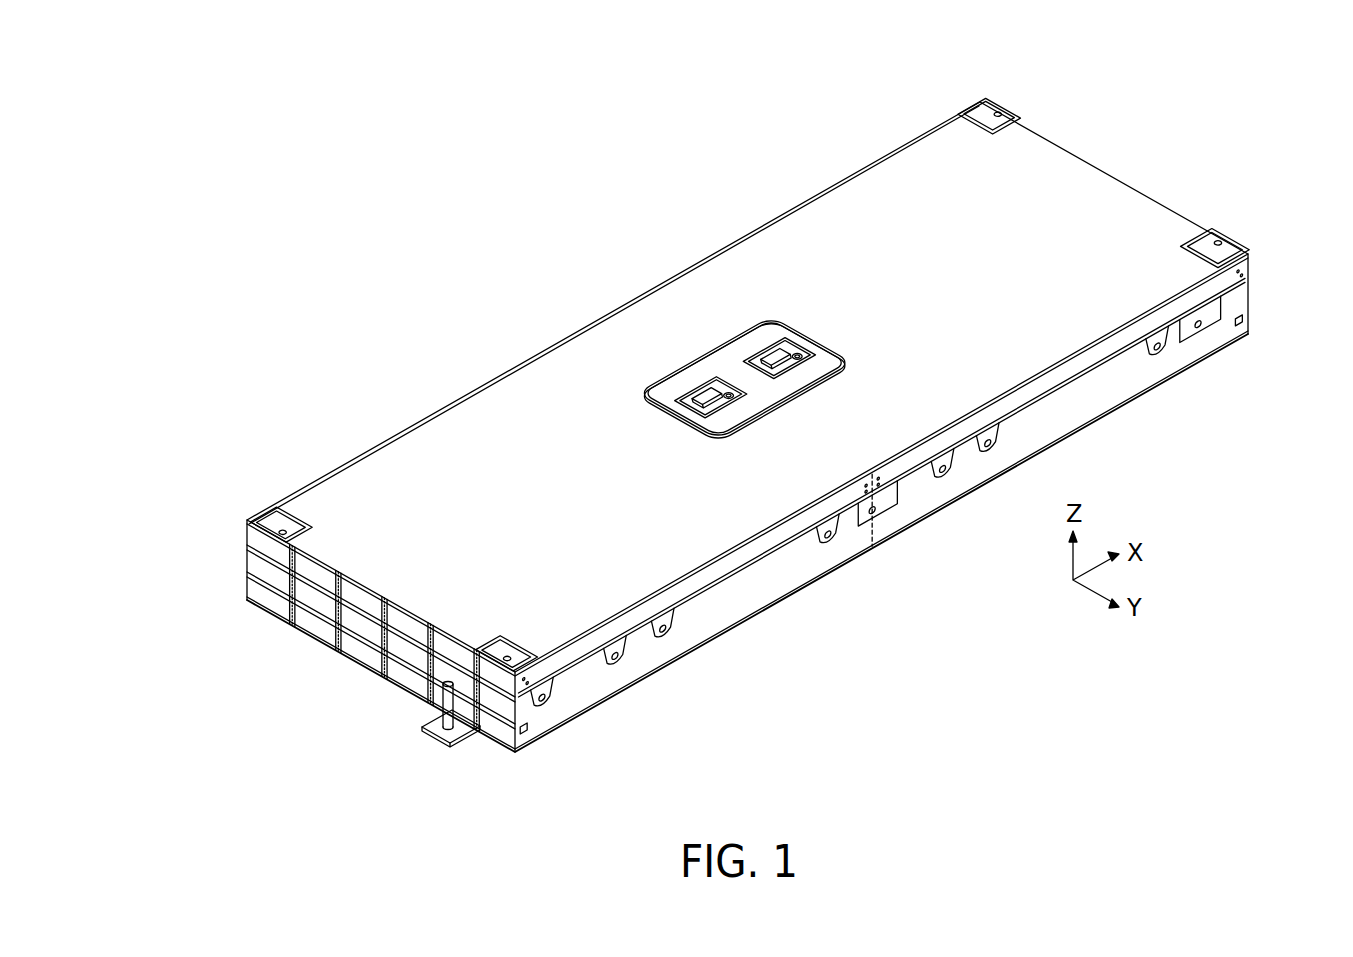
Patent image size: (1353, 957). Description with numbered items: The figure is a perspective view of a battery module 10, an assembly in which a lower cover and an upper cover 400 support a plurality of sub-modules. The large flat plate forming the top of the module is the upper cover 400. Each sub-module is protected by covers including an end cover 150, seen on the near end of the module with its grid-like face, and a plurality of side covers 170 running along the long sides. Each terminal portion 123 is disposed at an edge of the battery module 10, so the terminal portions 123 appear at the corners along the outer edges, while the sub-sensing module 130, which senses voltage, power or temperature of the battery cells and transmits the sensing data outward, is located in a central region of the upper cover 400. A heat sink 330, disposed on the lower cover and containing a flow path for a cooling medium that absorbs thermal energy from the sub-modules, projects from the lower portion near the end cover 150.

The battery module 10 is at (397, 251).
The terminal portion 123 is at (1000, 117).
The sub-sensing module 130 is at (793, 355).
The end cover 150 is at (365, 658).
The side cover 170 is at (1165, 352).
The heat sink 330 is at (432, 722).
The upper cover 400 is at (858, 186).